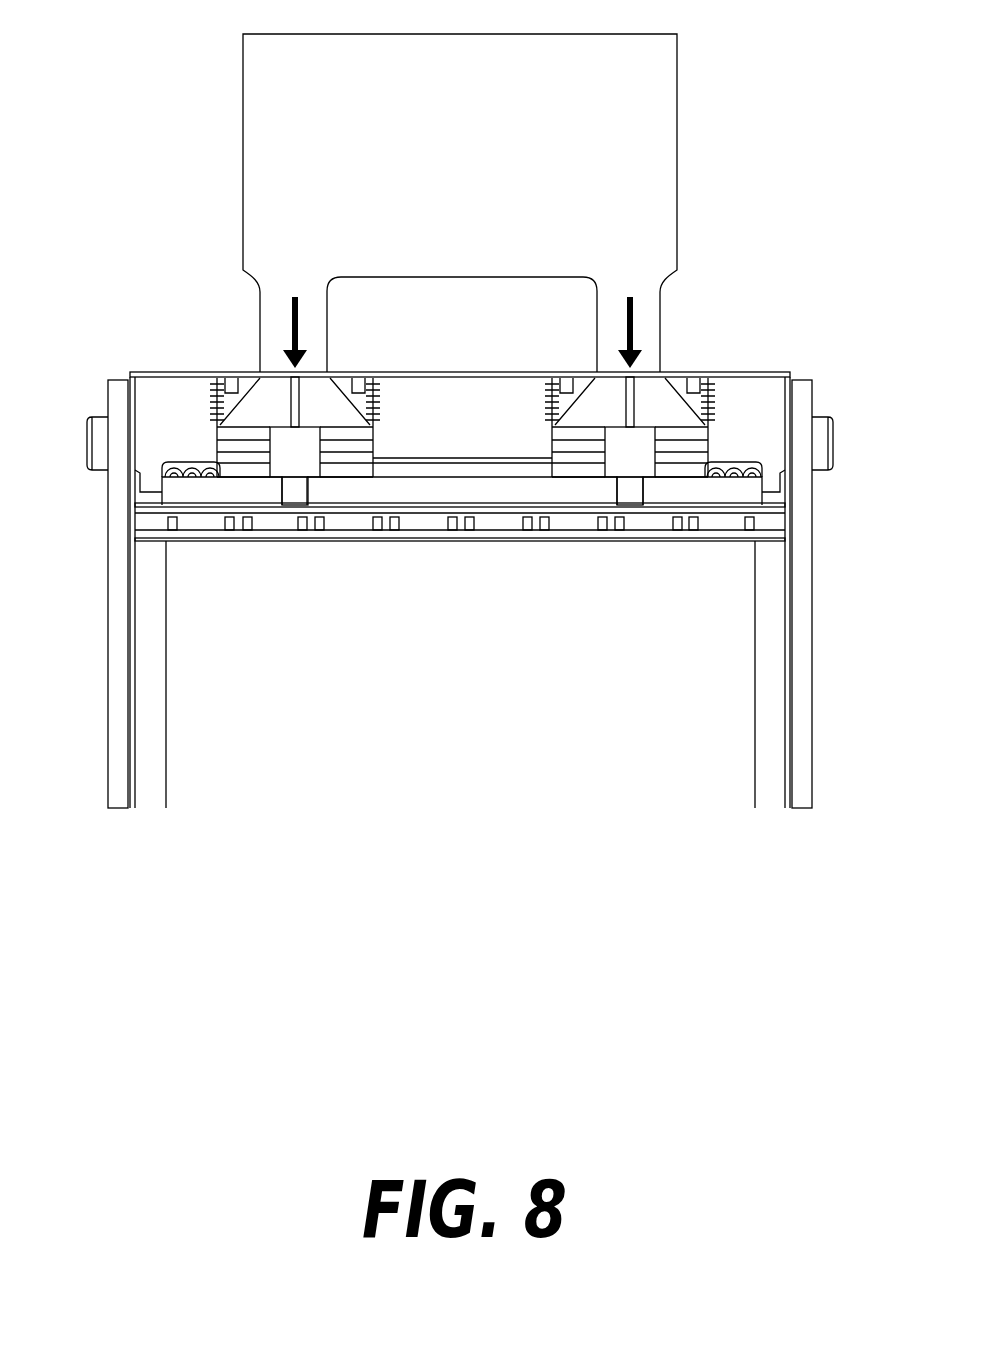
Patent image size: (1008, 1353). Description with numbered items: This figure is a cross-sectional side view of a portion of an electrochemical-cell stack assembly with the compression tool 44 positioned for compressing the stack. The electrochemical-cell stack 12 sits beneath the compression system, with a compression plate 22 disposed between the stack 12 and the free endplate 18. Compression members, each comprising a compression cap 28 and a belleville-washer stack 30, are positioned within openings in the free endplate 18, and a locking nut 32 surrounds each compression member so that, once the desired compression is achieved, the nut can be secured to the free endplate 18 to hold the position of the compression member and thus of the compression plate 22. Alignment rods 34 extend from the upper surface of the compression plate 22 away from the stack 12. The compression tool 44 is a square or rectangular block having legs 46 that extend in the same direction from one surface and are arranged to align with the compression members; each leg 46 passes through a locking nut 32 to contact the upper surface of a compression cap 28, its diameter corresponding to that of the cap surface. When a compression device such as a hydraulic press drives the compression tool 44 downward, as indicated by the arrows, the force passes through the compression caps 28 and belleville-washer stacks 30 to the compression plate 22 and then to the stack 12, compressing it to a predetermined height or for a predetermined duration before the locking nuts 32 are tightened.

The electrochemical-cell stack 12 is at (475, 685).
The free endplate 18 is at (793, 374).
The compression plate 22 is at (740, 500).
The compression cap 28 is at (380, 427).
The belleville-washer stack 30 is at (218, 437).
The locking nut 32 is at (231, 372).
The alignment rod 34 is at (285, 471).
The compression tool 44 is at (660, 119).
The leg 46 is at (320, 322).